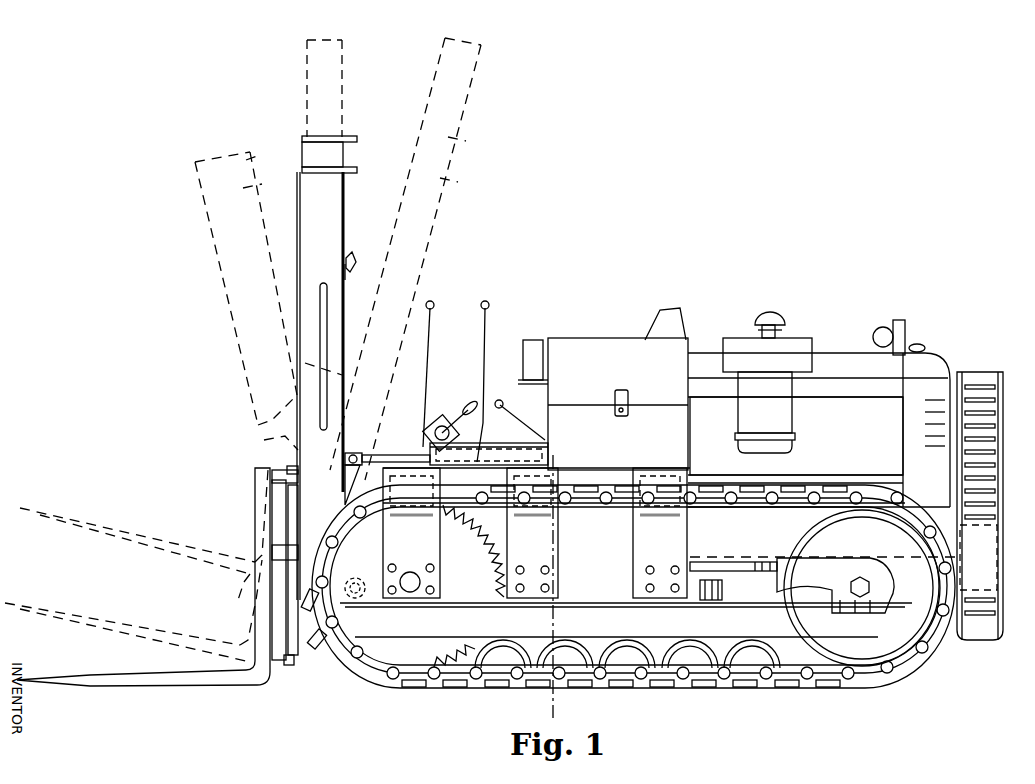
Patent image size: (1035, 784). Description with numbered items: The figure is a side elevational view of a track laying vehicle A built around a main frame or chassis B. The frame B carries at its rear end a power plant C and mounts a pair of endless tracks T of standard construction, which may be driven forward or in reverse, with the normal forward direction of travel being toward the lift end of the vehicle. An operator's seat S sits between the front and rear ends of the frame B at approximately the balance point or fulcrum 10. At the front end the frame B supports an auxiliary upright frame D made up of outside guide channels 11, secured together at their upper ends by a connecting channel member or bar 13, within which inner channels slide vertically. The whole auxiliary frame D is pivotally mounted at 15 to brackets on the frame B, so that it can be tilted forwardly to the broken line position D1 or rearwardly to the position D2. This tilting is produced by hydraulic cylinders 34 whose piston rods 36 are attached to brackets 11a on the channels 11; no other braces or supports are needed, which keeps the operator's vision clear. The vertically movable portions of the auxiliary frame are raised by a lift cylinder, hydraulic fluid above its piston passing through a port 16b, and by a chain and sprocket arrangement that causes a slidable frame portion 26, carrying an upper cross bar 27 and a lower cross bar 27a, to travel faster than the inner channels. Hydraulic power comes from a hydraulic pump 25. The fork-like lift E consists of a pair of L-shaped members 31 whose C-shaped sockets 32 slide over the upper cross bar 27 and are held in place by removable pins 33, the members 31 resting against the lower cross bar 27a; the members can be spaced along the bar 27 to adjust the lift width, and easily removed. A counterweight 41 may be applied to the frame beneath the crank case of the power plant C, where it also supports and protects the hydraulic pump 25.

The balance point 10 is at (553, 693).
The outside guide channels 11 is at (314, 242).
The brackets 11a is at (357, 452).
The connecting channel member 13 is at (345, 155).
The pivot points 15 is at (362, 599).
The port 16b is at (351, 262).
The hydraulic pump 25 is at (990, 536).
The slidable frame portion 26 is at (298, 652).
The upper cross bar 27 is at (278, 498).
The lower cross bar 27a is at (292, 666).
The L-shaped members 31 is at (130, 677).
The C-shaped sockets 32 is at (272, 478).
The removable pins 33 is at (286, 467).
The hydraulic cylinders 34 is at (478, 456).
The piston rods 36 is at (396, 455).
The counterweight 41 is at (1006, 635).
The vehicle A is at (808, 334).
The frame B is at (810, 629).
The power plant C is at (876, 426).
The auxiliary upright frame D is at (346, 210).
The forwardly tilted position D1 is at (214, 252).
The rearwardly tilted position D2 is at (434, 244).
The fork-like lift E is at (226, 690).
The operator's seat S is at (646, 320).
The endless tracks T is at (717, 688).